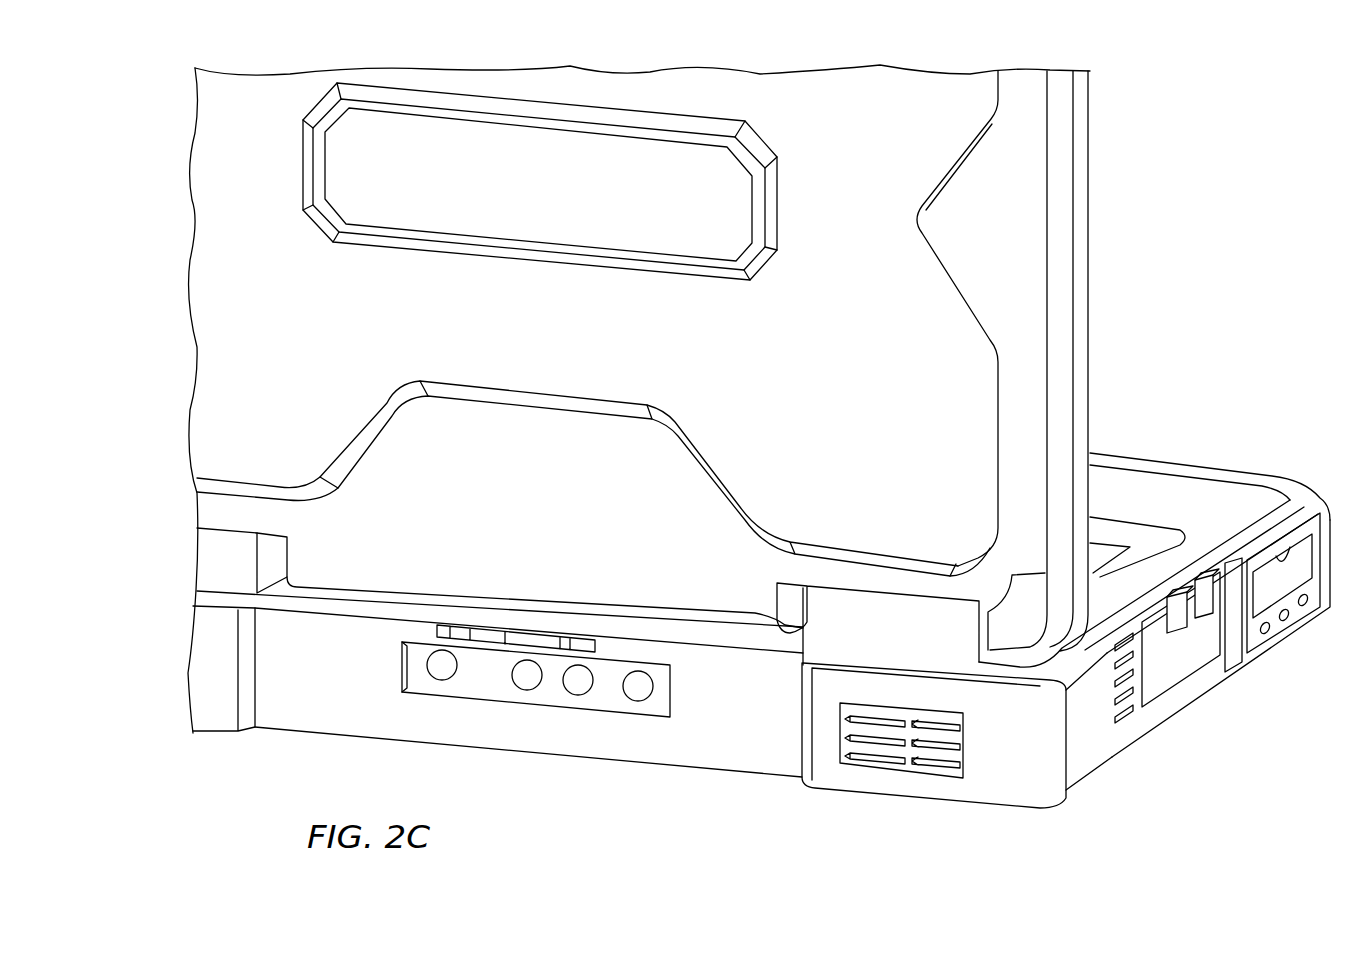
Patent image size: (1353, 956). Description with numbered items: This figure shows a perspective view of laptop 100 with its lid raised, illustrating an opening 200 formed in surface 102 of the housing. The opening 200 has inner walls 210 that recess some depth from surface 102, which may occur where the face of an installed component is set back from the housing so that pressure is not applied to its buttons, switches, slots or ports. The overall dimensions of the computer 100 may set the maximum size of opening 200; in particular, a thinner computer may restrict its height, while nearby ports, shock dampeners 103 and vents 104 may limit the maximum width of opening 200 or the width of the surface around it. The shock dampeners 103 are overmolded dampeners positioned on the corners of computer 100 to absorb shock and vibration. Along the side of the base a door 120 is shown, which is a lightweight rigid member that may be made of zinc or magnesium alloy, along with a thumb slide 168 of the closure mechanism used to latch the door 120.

The laptop 100 is at (759, 461).
The surface 102 is at (297, 705).
The shock dampeners 103 is at (223, 707).
The vents 104 is at (938, 757).
The door 120 is at (1163, 673).
The thumb slide 168 is at (1186, 603).
The opening 200 is at (546, 773).
The inner walls 210 is at (406, 678).